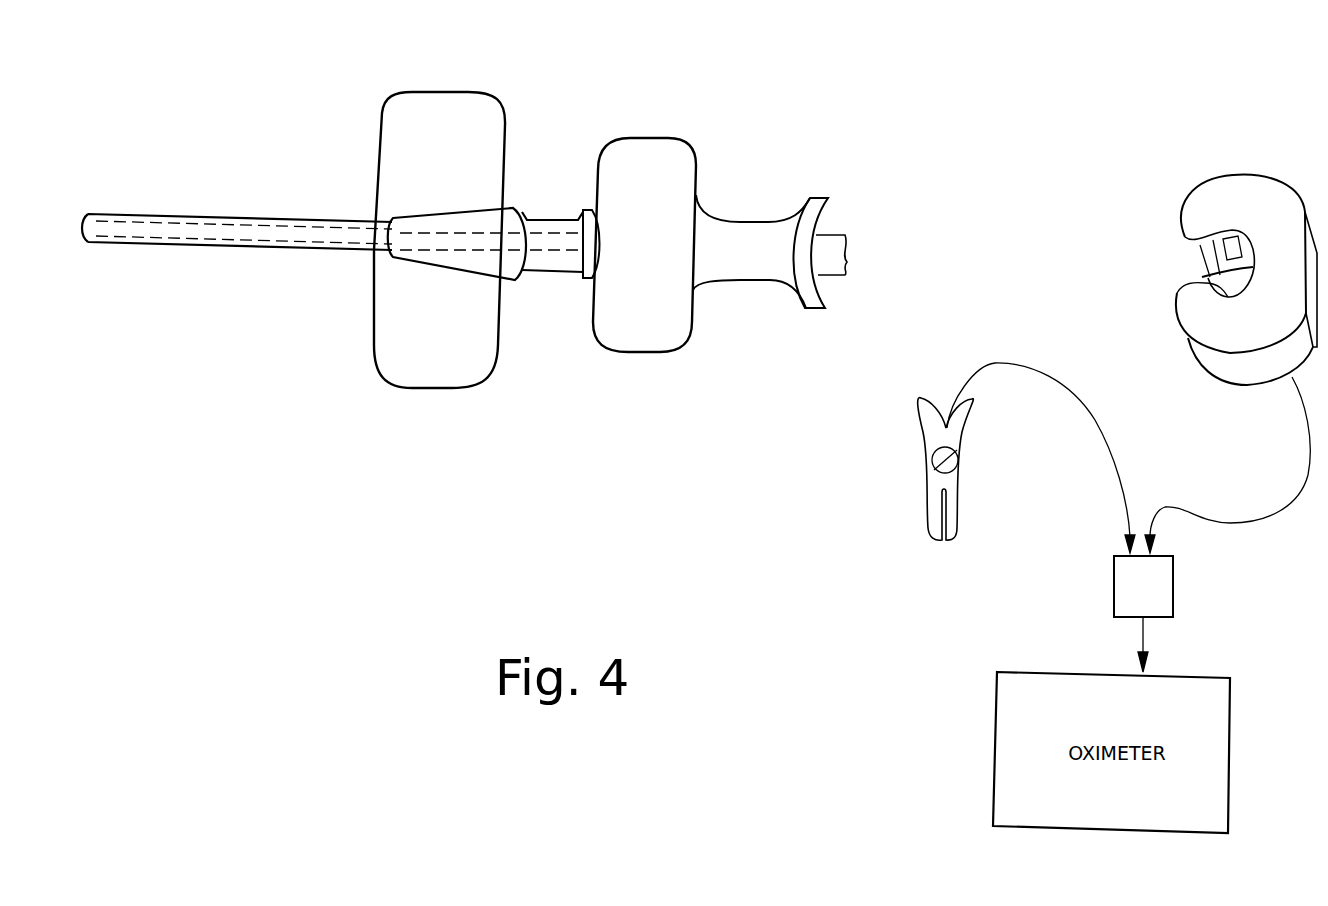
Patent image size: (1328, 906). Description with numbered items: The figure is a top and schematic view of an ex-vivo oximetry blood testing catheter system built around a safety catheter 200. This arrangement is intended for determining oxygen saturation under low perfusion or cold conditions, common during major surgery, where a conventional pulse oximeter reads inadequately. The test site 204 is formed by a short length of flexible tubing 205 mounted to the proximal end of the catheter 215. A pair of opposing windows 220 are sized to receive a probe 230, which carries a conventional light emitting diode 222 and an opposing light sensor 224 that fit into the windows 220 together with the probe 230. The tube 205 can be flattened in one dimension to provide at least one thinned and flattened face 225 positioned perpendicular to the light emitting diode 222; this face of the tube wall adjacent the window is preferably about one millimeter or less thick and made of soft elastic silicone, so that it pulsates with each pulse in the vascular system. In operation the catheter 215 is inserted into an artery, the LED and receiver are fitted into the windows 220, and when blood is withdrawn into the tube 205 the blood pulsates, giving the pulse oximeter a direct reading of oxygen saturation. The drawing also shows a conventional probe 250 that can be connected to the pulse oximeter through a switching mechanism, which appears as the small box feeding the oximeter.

The safety catheter 200 is at (492, 234).
The test site 204 is at (557, 105).
The flexible tubing 205 is at (577, 264).
The catheter 215 is at (175, 218).
The opposing windows 220 is at (541, 275).
The flattened face 225 is at (543, 218).
The probe 230 is at (1216, 255).
The light emitting diode 222 is at (1223, 257).
The light sensor 224 is at (1205, 283).
The conventional probe 250 is at (935, 483).